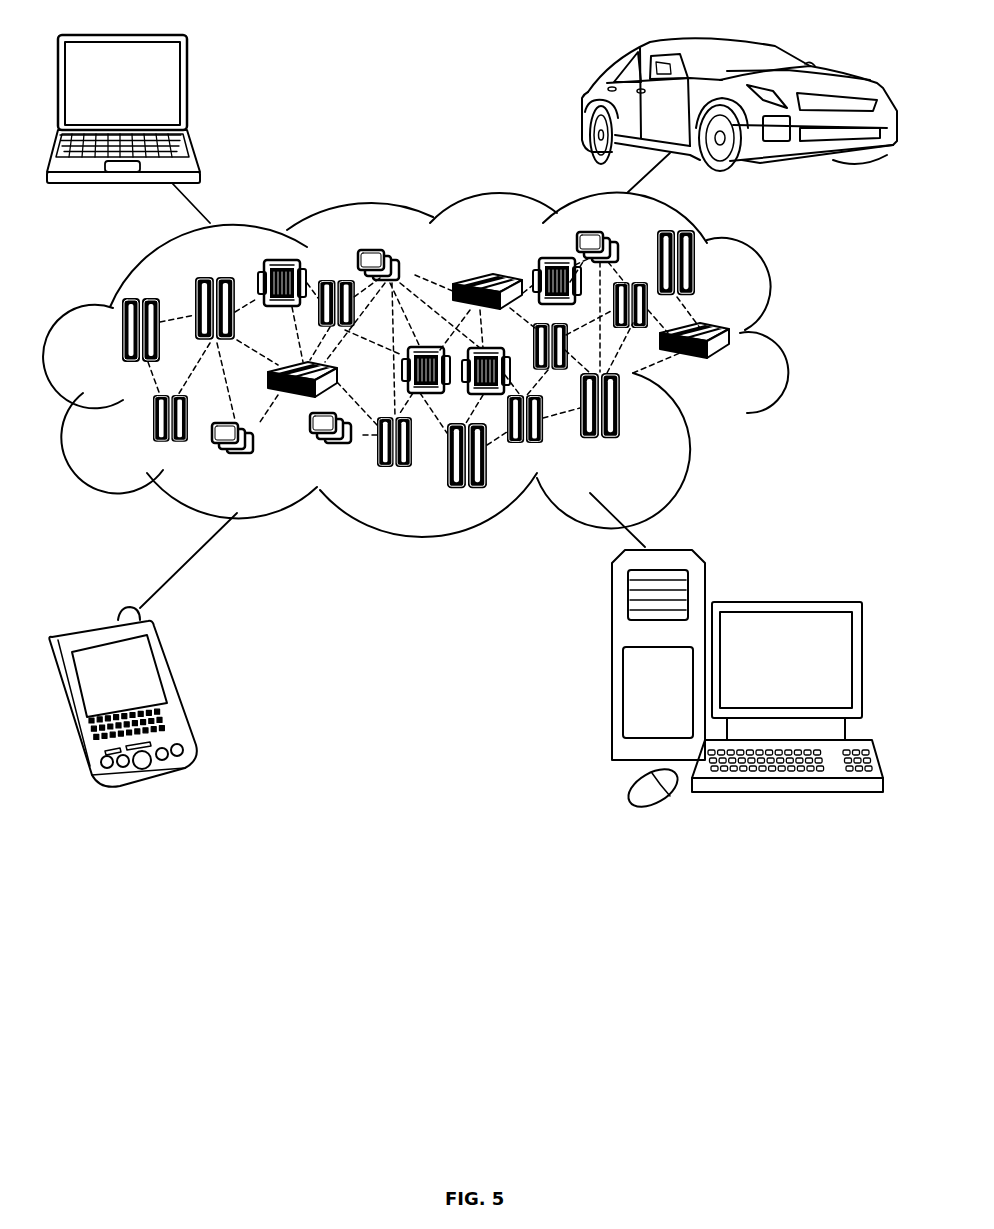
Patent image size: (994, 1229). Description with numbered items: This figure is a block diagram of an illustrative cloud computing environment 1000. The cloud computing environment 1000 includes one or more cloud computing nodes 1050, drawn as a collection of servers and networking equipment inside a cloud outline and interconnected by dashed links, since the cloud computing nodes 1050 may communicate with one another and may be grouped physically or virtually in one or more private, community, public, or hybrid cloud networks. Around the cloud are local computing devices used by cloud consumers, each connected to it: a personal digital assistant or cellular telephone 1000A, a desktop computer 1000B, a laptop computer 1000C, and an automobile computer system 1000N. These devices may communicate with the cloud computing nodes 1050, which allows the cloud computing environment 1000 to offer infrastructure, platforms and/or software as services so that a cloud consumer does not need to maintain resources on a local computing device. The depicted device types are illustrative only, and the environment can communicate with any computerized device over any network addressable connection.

The cloud computing environment 1000 is at (787, 340).
The cloud computing nodes 1050 is at (745, 372).
The personal digital assistant (PDA) or cellular telephone 1000A is at (180, 687).
The desktop computer 1000B is at (783, 602).
The laptop computer 1000C is at (187, 92).
The automobile computer system 1000N is at (585, 108).